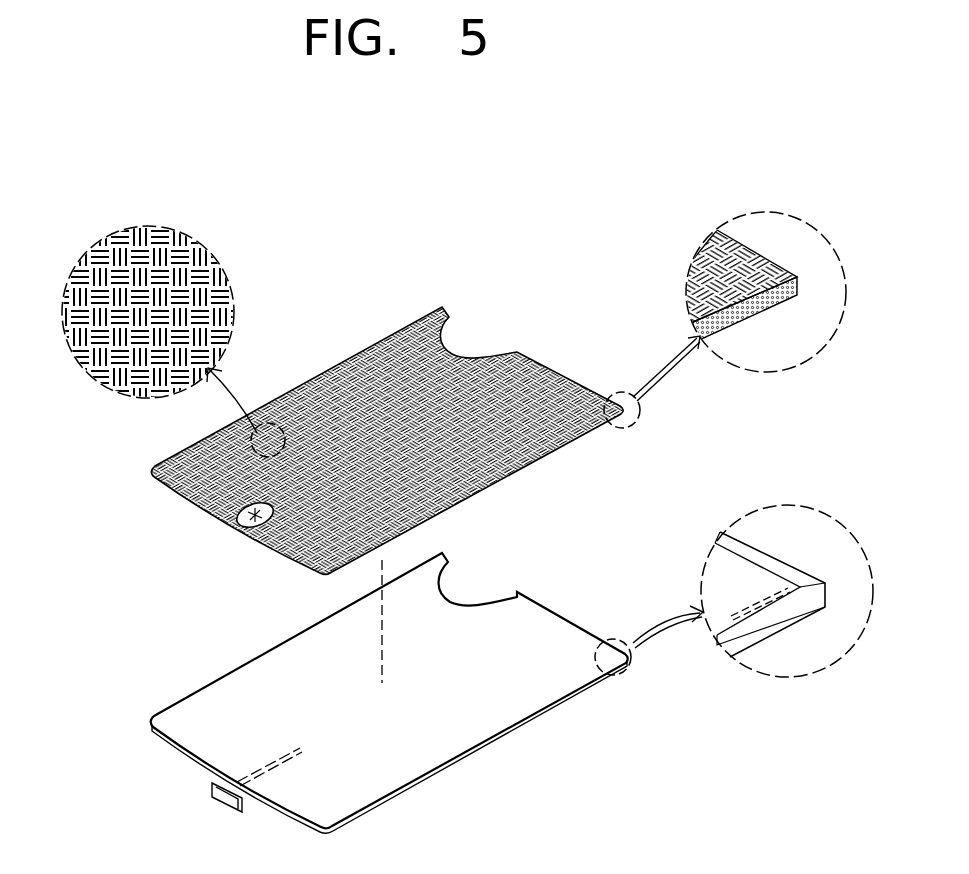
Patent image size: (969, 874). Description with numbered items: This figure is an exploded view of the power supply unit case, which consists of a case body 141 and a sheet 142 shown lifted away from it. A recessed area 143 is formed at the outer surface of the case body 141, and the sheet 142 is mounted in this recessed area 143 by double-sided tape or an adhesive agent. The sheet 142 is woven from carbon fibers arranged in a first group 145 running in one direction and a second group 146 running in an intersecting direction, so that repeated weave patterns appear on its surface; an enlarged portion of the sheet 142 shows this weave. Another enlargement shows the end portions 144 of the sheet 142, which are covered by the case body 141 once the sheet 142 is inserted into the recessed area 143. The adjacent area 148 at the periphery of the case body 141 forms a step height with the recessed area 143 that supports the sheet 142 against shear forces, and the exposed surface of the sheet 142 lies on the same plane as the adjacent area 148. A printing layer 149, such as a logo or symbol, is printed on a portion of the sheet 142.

The case body 141 is at (563, 618).
The sheet 142 is at (387, 342).
The recessed area 143 is at (740, 577).
The end portions 144 is at (763, 307).
The first group 145 is at (93, 280).
The second group 146 is at (130, 280).
The adjacent area 148 is at (782, 560).
The printing layer 149 is at (208, 523).